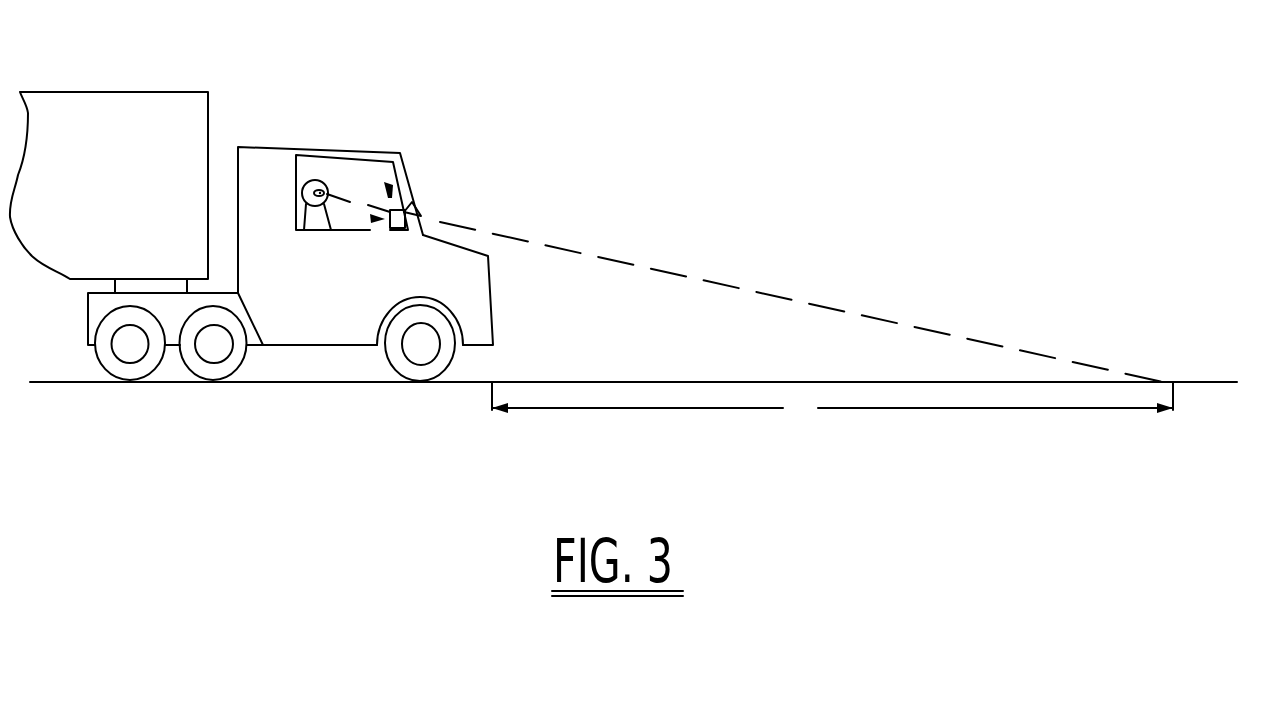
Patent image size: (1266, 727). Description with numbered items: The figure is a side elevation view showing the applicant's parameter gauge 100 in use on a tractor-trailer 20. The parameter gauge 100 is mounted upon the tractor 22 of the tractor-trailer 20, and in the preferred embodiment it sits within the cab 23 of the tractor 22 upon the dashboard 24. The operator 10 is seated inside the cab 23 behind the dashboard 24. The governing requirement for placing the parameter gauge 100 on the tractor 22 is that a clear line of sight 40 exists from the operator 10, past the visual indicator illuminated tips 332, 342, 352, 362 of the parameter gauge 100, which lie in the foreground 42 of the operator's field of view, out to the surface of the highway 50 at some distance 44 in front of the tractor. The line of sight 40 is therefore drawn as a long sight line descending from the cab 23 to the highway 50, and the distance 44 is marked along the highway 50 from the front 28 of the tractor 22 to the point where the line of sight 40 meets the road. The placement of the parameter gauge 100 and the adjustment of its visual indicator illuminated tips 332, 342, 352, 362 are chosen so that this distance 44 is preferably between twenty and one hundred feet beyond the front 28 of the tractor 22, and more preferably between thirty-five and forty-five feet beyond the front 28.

The operator 10 is at (310, 233).
The tractor-trailer 20 is at (226, 133).
The tractor 22 is at (307, 146).
The cab 23 is at (369, 172).
The dashboard 24 is at (396, 232).
The front 28 is at (494, 331).
The line of sight 40 is at (873, 318).
The foreground 42 is at (393, 186).
The distance 44 is at (832, 401).
The highway 50 is at (1213, 383).
The parameter gauge 100 is at (375, 226).
The visual indicator illuminated tip 332 is at (555, 202).
The visual indicator illuminated tip 342 is at (555, 202).
The visual indicator illuminated tip 352 is at (555, 202).
The visual indicator illuminated tip 362 is at (404, 212).